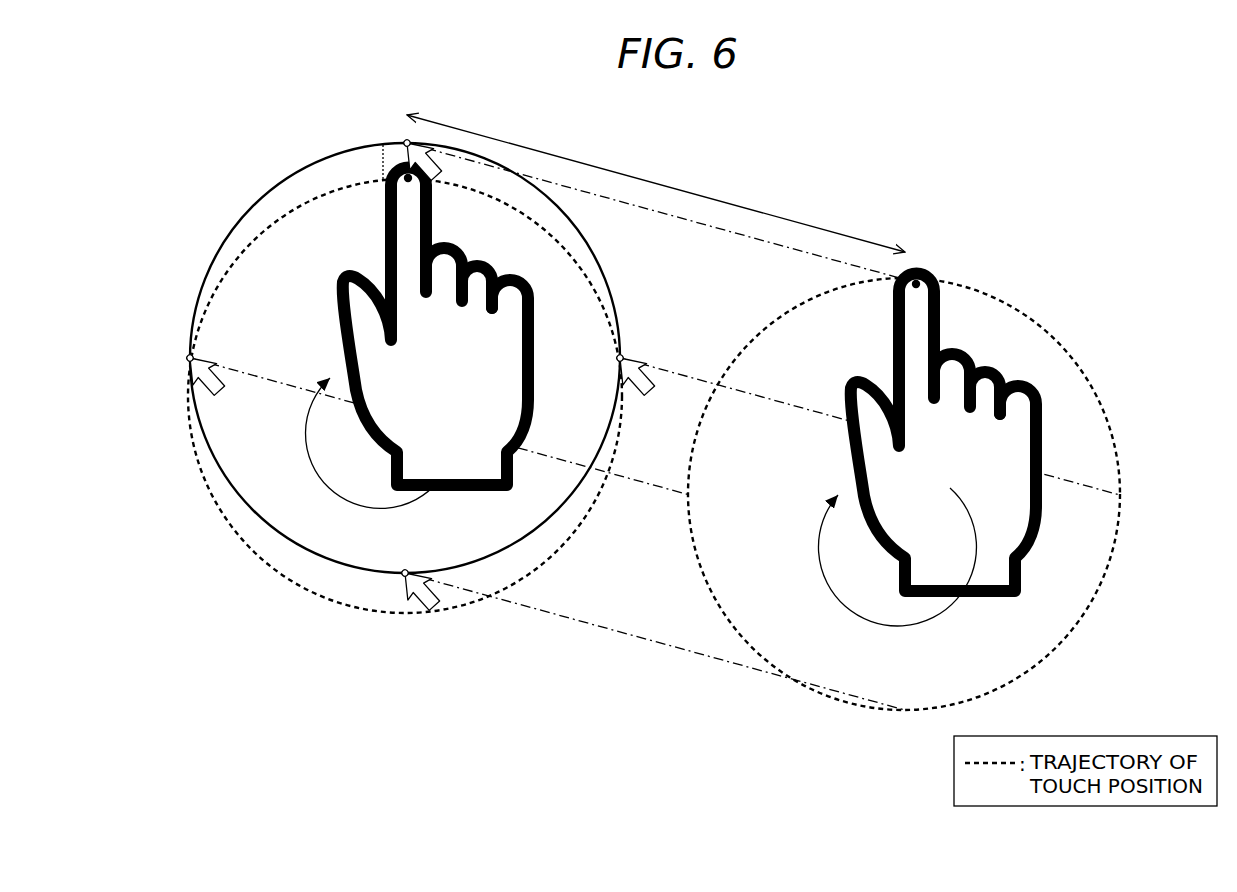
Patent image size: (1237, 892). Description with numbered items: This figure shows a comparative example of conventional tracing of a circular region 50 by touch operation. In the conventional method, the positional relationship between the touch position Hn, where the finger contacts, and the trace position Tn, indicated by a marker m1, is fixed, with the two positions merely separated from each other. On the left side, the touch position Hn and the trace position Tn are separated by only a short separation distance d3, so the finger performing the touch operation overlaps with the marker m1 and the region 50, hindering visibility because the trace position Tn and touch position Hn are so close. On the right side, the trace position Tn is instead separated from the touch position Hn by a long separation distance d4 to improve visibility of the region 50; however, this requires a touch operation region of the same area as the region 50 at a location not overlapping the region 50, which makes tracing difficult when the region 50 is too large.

The circular region 50 is at (260, 200).
The trace position Tn is at (405, 141).
The short separation distance d3 is at (367, 162).
The touch position Hn is at (400, 179).
The marker m1 is at (418, 366).
The long separation distance d4 is at (656, 183).